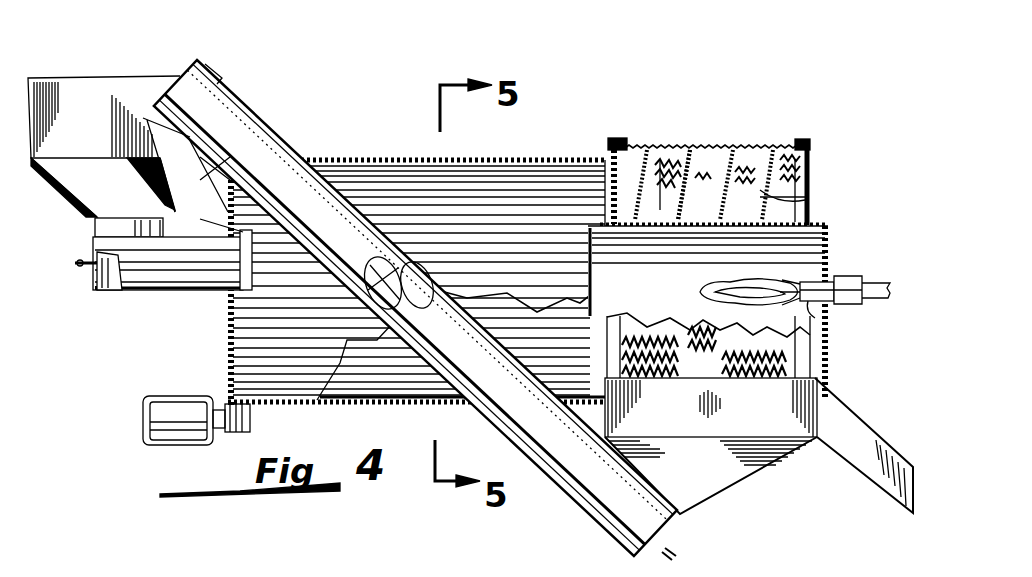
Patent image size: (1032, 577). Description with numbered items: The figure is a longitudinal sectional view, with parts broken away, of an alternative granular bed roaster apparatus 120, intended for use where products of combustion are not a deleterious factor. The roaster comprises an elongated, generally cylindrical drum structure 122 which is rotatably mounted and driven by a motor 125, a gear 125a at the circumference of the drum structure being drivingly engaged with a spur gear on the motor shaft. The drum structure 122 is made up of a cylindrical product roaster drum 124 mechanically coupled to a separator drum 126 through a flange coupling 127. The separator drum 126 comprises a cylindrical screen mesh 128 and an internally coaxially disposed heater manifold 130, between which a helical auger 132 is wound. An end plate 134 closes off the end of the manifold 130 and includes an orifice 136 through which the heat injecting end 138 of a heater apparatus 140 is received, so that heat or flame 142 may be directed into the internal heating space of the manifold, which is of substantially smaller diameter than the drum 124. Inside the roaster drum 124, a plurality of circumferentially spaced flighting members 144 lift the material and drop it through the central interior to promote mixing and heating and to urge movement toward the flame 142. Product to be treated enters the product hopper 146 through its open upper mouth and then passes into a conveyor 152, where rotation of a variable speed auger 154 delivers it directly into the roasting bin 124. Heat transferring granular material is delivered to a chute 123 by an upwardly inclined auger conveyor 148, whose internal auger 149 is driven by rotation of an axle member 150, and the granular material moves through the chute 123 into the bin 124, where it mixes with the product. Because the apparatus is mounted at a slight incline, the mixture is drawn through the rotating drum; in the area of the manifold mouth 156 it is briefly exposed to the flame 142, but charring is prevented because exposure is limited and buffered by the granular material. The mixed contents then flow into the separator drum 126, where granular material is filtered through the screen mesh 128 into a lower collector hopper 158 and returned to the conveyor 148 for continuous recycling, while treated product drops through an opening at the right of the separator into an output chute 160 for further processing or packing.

The granular bed roaster apparatus 120 is at (594, 76).
The drum structure 122 is at (624, 110).
The chute 123 is at (190, 190).
The product roaster drum 124 is at (226, 354).
The motor 125 is at (185, 446).
The gear 125a is at (250, 412).
The separator drum 126 is at (780, 139).
The flange coupling 127 is at (606, 140).
The cylindrical screen mesh 128 is at (658, 148).
The heater manifold 130 is at (812, 226).
The helical auger 132 is at (782, 195).
The end plate 134 is at (829, 240).
The orifice 136 is at (836, 282).
The heat injecting end 138 is at (824, 322).
The heater apparatus 140 is at (850, 304).
The flame 142 is at (697, 292).
The flighting members 144 is at (405, 197).
The product hopper 146 is at (133, 76).
The auger conveyor 148 is at (277, 148).
The auger 149 is at (422, 286).
The axle member 150 is at (676, 552).
The conveyor 152 is at (118, 292).
The variable speed auger 154 is at (95, 275).
The manifold mouth 156 is at (577, 306).
The lower collector hopper 158 is at (746, 470).
The output chute 160 is at (870, 437).